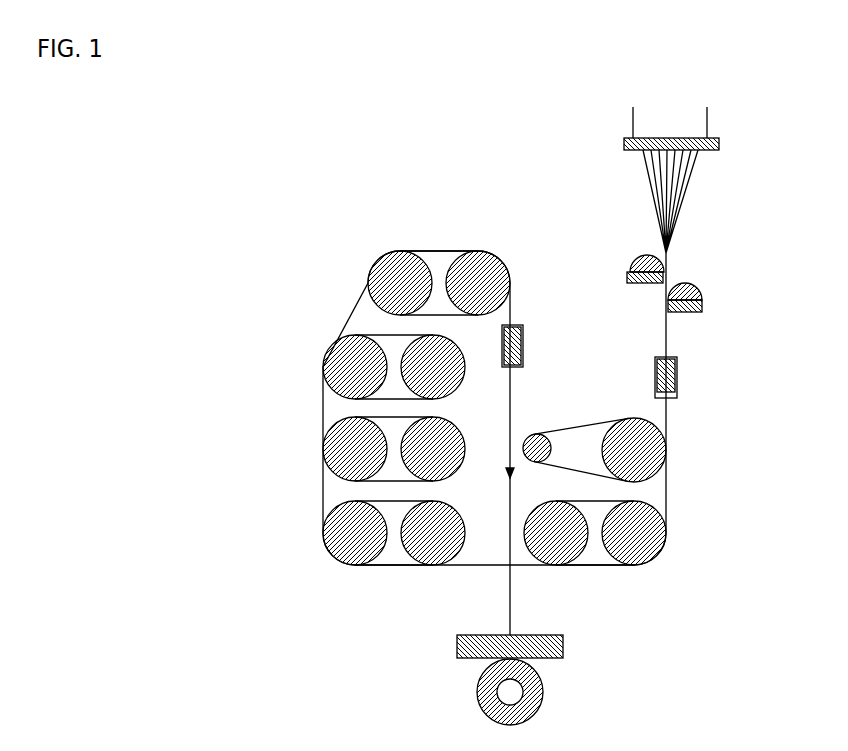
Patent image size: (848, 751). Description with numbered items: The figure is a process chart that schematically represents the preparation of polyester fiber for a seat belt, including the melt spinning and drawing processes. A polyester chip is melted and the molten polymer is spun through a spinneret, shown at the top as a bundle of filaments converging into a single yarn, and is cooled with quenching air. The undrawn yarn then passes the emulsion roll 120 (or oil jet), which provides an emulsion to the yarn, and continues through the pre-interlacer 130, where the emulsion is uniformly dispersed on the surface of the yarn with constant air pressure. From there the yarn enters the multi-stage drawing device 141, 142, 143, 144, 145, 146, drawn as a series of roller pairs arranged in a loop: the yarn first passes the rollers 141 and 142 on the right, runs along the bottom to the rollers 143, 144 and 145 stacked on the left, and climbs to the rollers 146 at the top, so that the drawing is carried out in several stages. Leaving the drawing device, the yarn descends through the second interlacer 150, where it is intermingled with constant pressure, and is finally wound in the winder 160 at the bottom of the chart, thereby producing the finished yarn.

The emulsion roll 120 is at (710, 272).
The pre-interlacer 130 is at (683, 371).
The multi-stage drawing device 141 is at (672, 458).
The multi-stage drawing device 142 is at (670, 546).
The multi-stage drawing device 143 is at (315, 535).
The multi-stage drawing device 144 is at (315, 452).
The multi-stage drawing device 145 is at (325, 352).
The multi-stage drawing device 146 is at (366, 265).
The second interlacer 150 is at (527, 321).
The winder 160 is at (550, 690).